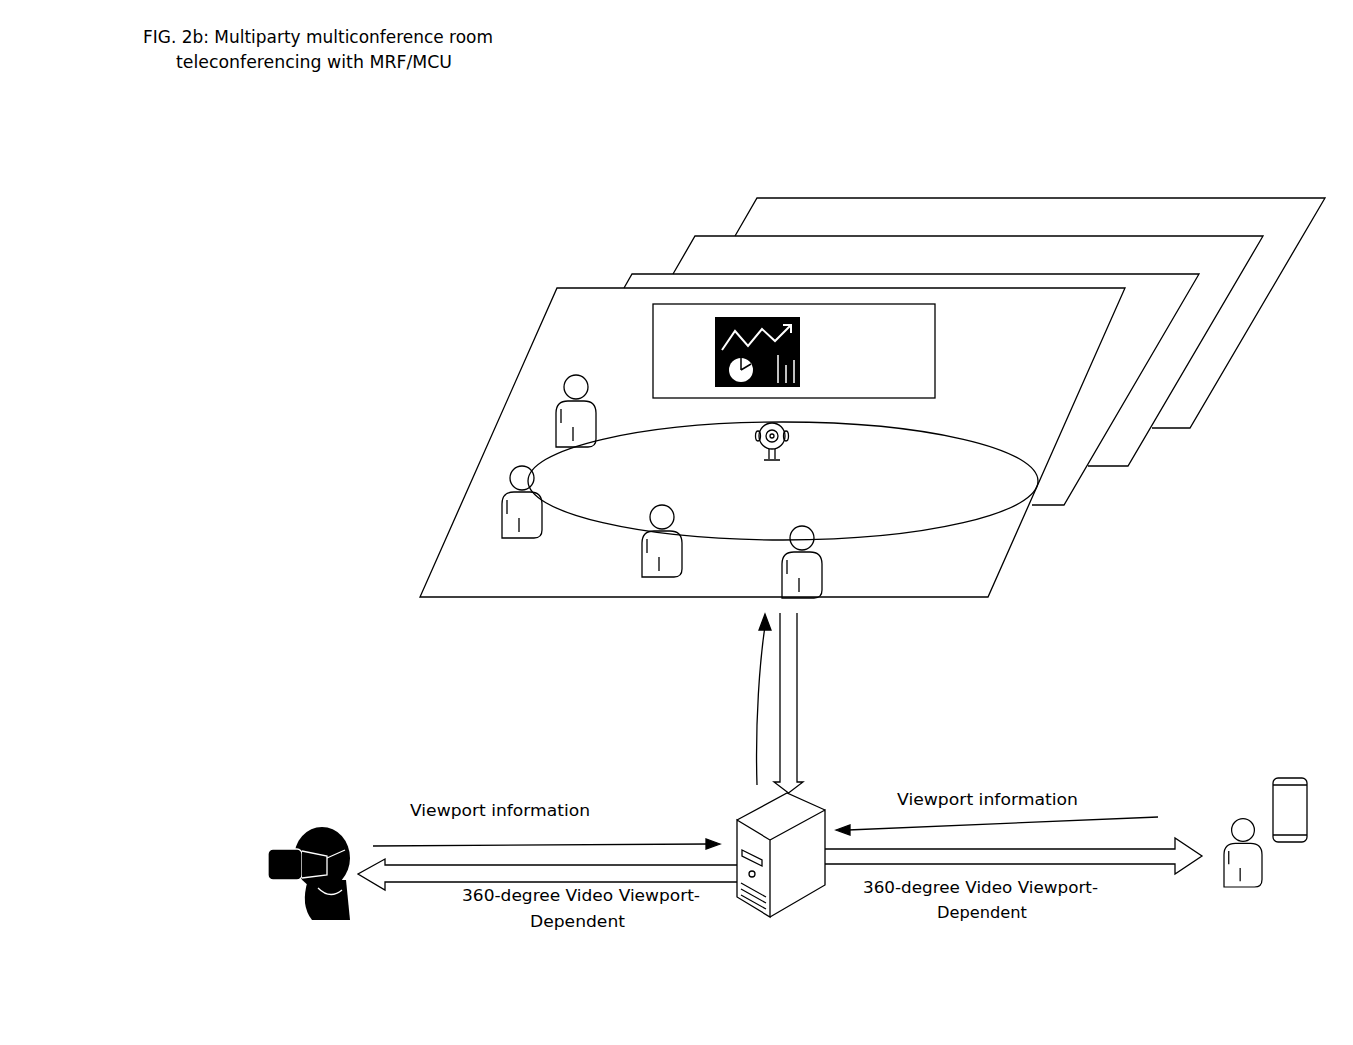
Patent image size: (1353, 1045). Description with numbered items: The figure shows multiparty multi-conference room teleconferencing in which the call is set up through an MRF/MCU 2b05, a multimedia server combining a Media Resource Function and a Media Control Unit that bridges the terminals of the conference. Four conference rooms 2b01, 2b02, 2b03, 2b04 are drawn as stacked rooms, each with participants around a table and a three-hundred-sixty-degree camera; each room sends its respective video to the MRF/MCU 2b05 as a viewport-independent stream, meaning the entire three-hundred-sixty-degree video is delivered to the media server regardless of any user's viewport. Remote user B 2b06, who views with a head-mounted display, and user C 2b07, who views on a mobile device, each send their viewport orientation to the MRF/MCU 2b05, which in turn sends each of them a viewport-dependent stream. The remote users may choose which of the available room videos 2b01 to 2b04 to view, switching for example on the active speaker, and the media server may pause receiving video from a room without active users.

The conference room 2b01 is at (497, 415).
The conference room 2b02 is at (620, 277).
The conference room 2b03 is at (688, 239).
The conference room 2b04 is at (763, 219).
The MRF/MCU 2b05 is at (757, 815).
The user B 2b06 is at (263, 845).
The user C 2b07 is at (1273, 783).